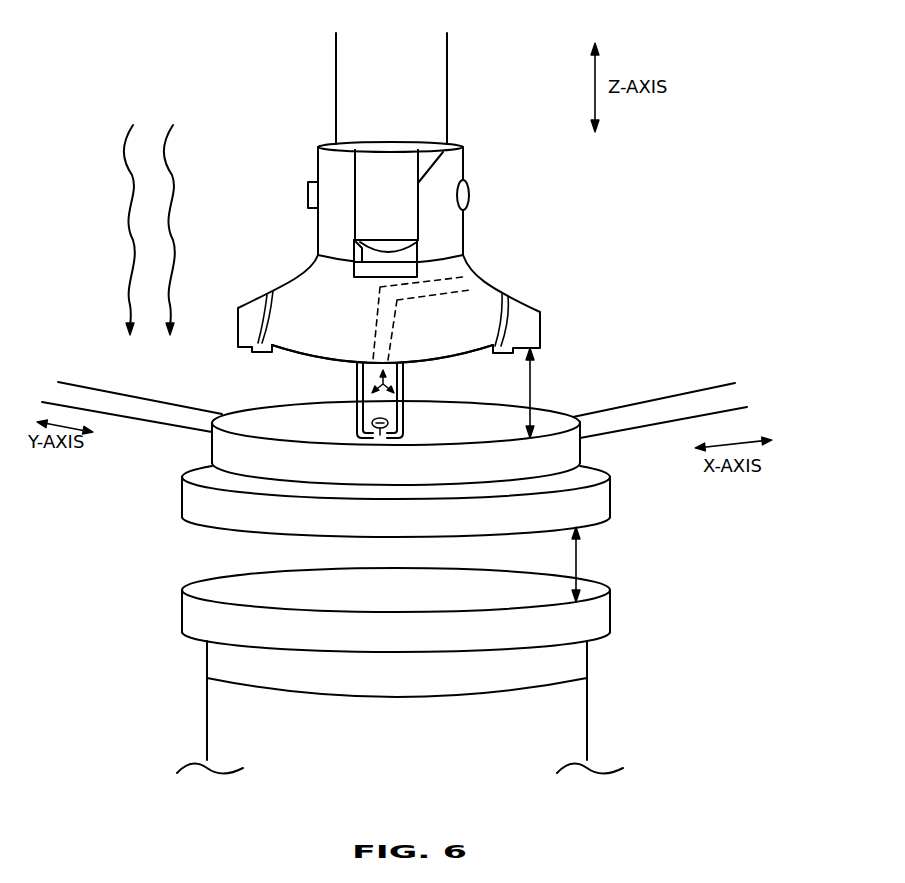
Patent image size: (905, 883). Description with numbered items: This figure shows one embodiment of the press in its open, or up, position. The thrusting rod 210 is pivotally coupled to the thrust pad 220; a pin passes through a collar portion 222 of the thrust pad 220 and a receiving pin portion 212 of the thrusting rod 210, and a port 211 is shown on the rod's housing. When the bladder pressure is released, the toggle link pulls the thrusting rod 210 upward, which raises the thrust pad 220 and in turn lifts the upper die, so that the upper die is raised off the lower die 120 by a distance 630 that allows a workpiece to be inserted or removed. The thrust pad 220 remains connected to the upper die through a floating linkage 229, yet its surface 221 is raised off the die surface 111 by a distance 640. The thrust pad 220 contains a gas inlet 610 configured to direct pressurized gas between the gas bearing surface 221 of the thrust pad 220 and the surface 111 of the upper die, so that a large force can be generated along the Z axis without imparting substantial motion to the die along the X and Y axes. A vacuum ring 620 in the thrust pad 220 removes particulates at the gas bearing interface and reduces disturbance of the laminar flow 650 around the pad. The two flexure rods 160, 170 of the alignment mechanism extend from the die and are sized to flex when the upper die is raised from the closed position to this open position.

The surface of upper die 111 is at (549, 412).
The lower die 120 is at (141, 610).
The flexure rod 160 is at (133, 414).
The flexure rod 170 is at (668, 422).
The thrusting rod 210 is at (448, 84).
The port 211 is at (471, 192).
The receiving pin portion 212 is at (403, 194).
The thrusting pad 220 is at (541, 313).
The surface of thrust pad 221 is at (441, 363).
The collar housing 222 is at (318, 171).
The floating linkage 229 is at (418, 422).
The gas inlet 610 is at (485, 279).
The vacuum ring 620 is at (265, 296).
The distance 630 is at (578, 545).
The distance 640 is at (536, 372).
The laminar flow 650 is at (147, 190).